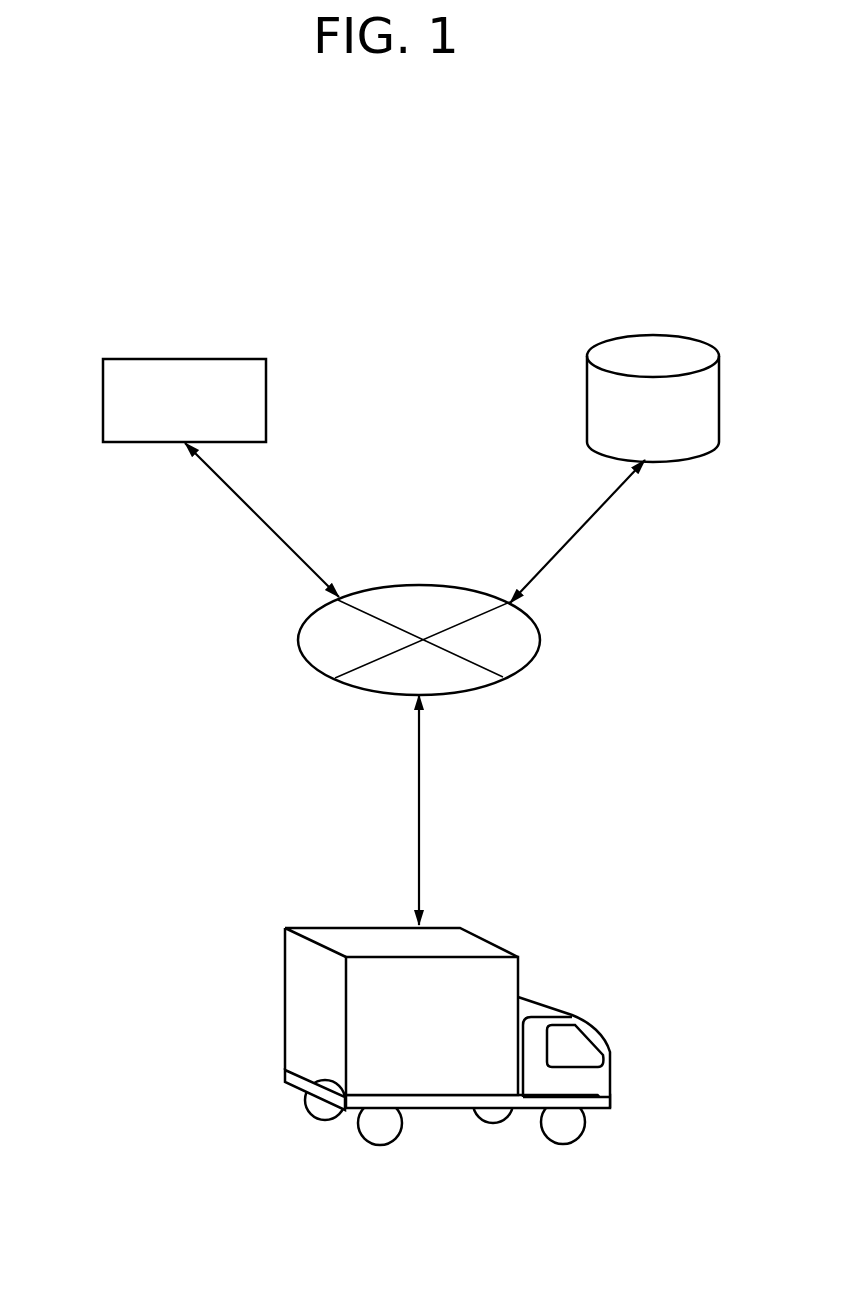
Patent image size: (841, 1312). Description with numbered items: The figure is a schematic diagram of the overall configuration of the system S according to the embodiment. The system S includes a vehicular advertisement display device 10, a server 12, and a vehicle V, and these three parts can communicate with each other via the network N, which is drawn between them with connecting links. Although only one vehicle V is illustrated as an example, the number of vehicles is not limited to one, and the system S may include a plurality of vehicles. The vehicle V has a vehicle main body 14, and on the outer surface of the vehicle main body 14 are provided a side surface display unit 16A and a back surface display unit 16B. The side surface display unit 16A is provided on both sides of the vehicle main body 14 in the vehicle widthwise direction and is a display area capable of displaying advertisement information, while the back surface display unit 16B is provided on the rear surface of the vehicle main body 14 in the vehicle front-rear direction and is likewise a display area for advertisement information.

The system S is at (300, 248).
The vehicular advertisement display device 10 is at (153, 357).
The server 12 is at (678, 333).
The network N is at (403, 585).
The vehicle V is at (316, 883).
The vehicle main body 14 is at (296, 925).
The side surface display unit 16A is at (440, 1068).
The back surface display unit 16B is at (315, 1025).